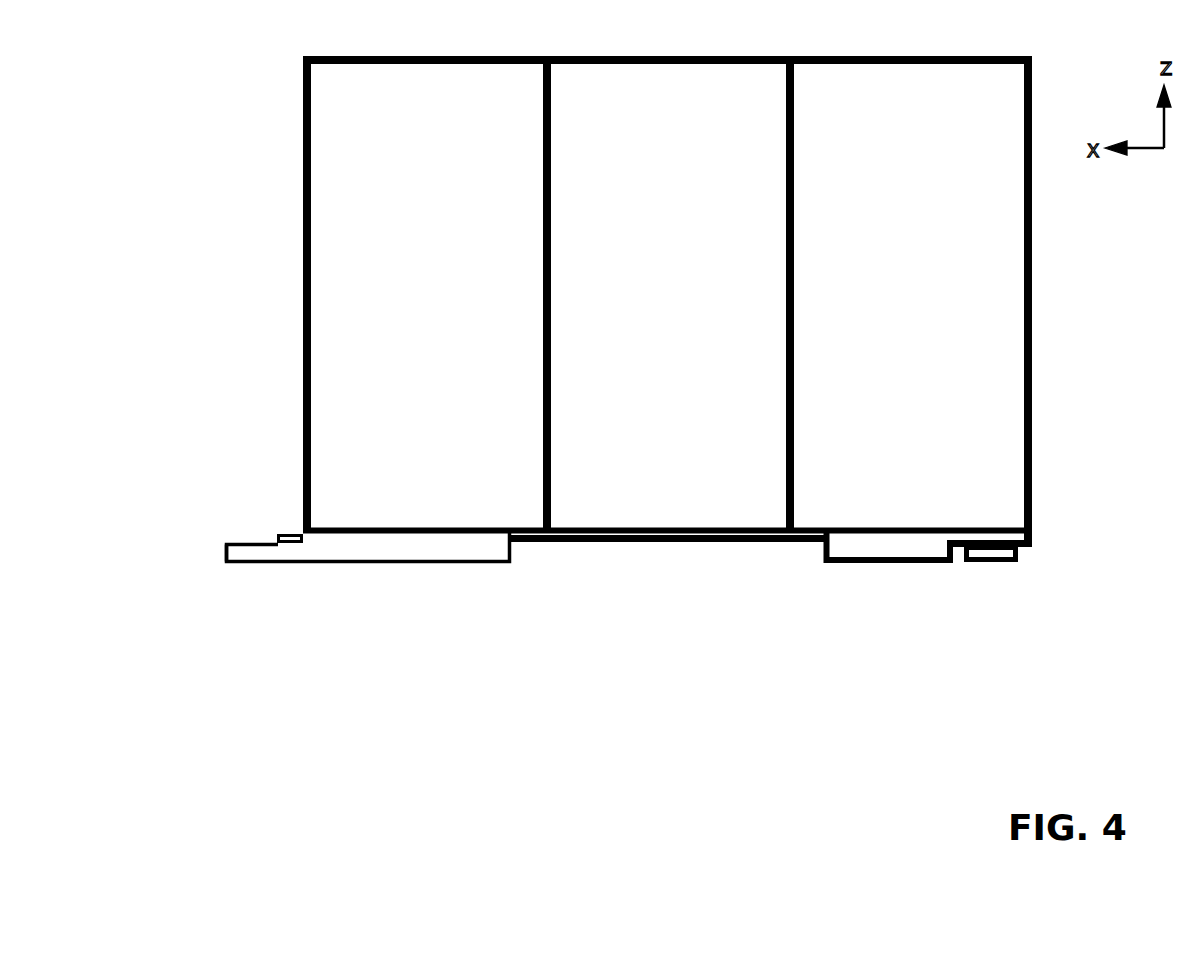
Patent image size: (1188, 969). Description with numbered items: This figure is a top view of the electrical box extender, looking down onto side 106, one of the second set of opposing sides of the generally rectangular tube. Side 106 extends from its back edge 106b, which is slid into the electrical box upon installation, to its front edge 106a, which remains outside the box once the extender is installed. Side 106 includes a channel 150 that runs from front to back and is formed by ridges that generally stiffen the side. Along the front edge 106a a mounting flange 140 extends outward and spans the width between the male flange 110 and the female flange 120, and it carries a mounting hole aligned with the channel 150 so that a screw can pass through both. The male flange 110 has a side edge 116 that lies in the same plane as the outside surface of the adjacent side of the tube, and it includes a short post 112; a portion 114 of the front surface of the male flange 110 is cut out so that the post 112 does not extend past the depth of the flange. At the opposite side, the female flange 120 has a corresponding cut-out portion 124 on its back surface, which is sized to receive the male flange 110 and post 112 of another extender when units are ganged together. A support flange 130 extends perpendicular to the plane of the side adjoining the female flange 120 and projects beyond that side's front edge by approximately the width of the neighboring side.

The side 106 is at (316, 204).
The front edge 106a is at (343, 515).
The back edge 106b is at (322, 56).
The male flange 110 is at (840, 552).
The post 112 is at (1000, 563).
The portion 114 is at (949, 573).
The side edge 116 is at (1046, 538).
The female flange 120 is at (420, 550).
The portion 124 is at (238, 533).
The support flange 130 is at (288, 536).
The mounting flange 140 is at (675, 543).
The channel 150 is at (611, 468).